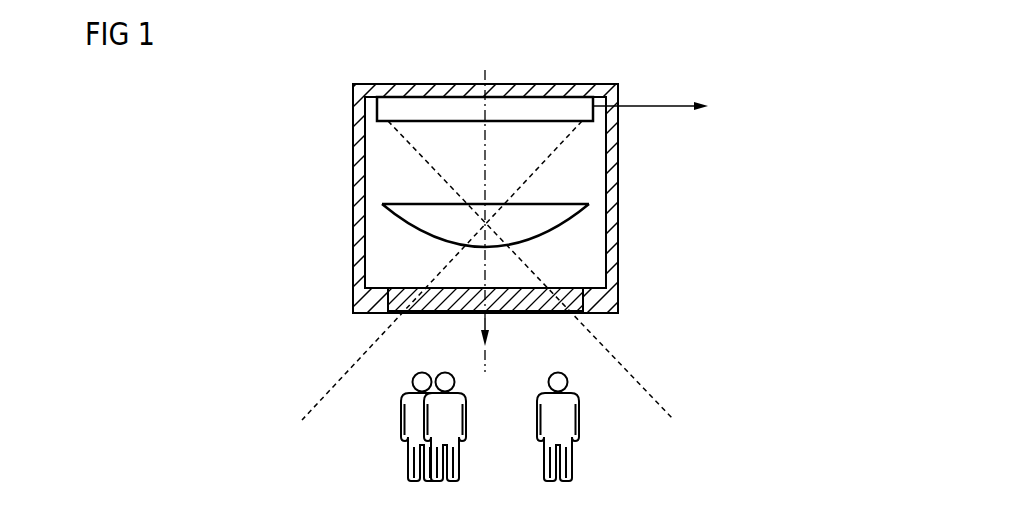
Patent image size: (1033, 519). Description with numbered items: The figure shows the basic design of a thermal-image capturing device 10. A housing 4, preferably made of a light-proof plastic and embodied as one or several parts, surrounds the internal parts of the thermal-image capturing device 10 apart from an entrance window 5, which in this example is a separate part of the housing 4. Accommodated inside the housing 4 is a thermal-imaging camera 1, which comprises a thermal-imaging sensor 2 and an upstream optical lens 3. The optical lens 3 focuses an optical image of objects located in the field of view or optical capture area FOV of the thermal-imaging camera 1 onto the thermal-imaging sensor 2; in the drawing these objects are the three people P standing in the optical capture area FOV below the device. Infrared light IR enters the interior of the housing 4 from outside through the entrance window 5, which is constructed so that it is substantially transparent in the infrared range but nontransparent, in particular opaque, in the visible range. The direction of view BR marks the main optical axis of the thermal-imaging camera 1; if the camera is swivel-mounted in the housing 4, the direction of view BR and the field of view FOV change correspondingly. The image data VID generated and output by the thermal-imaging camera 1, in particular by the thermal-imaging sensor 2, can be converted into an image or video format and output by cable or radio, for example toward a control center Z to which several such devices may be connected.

The thermal-imaging camera 1 is at (484, 172).
The thermal-imaging sensor 2 is at (377, 108).
The optical lens 3 is at (586, 205).
The housing 4 is at (612, 146).
The entrance window 5 is at (546, 313).
The thermal-image capturing device 10 is at (481, 232).
The people P is at (462, 417).
The control center Z is at (660, 105).
The image data VID is at (649, 92).
The infrared light IR is at (485, 194).
The direction of view BR is at (470, 345).
The field of view FOV is at (679, 353).